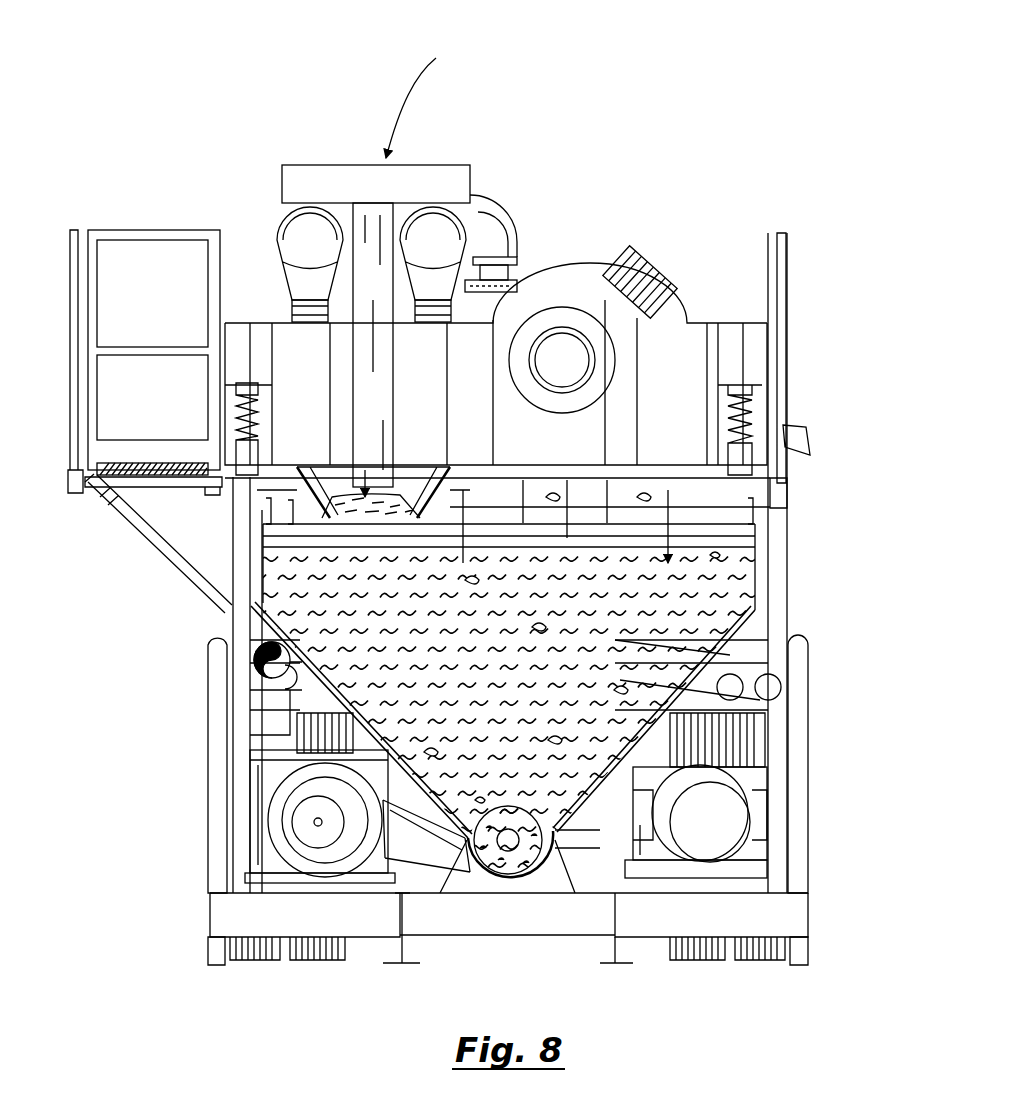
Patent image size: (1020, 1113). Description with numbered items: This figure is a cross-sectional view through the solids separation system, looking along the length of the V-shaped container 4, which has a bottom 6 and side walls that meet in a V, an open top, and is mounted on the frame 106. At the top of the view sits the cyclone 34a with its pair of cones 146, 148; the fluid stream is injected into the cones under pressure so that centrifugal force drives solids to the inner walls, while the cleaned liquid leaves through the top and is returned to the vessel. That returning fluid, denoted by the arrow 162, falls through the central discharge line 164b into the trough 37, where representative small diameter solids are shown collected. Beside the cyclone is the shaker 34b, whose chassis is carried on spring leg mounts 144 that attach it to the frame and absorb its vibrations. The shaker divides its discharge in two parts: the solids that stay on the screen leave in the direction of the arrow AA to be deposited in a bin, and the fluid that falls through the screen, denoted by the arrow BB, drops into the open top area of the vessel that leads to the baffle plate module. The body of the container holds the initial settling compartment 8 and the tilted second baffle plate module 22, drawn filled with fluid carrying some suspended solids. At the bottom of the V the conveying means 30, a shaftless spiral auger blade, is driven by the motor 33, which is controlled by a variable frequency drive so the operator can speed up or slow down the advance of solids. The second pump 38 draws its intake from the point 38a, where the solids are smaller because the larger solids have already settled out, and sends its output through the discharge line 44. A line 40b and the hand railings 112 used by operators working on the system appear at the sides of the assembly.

The cyclone 34a is at (379, 101).
The feed conduit 40b is at (480, 53).
The fluid arrow 162 is at (376, 200).
The elbow pipe 164b is at (421, 163).
The cone 148 is at (300, 248).
The cone 146 is at (455, 250).
The hand railings 112 is at (142, 232).
The shaker 34b is at (650, 352).
The spring leg mounts 144 is at (752, 418).
The solids flow arrow AA is at (797, 430).
The fluid flow arrow BB is at (690, 512).
The trough 37 is at (297, 487).
The initial settling compartment 8 is at (752, 568).
The container 4 is at (730, 652).
The second baffle plate module 22 is at (700, 690).
The discharge line 44 is at (268, 675).
The second pump 38 is at (290, 825).
The intake point 38a is at (432, 852).
The conveying means 30 is at (512, 880).
The bottom 6 is at (494, 880).
The motor 33 is at (710, 822).
The frame 106 is at (215, 905).